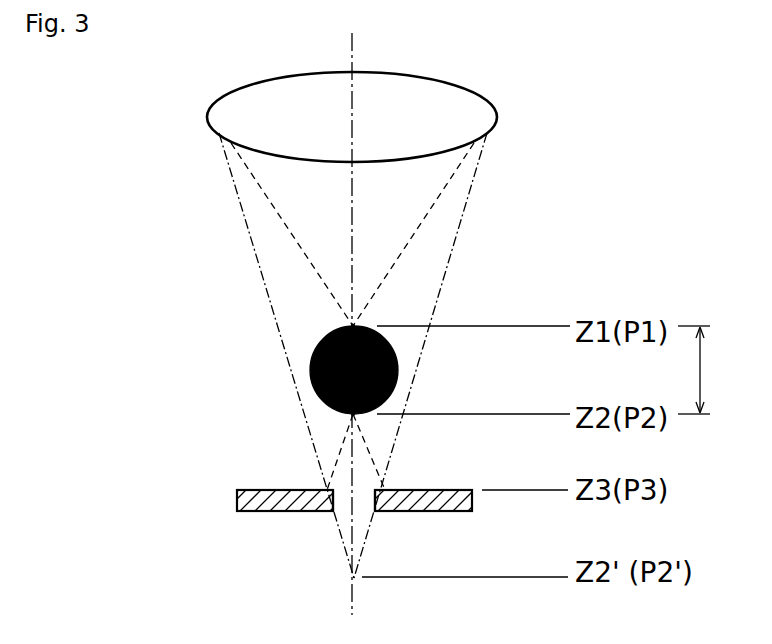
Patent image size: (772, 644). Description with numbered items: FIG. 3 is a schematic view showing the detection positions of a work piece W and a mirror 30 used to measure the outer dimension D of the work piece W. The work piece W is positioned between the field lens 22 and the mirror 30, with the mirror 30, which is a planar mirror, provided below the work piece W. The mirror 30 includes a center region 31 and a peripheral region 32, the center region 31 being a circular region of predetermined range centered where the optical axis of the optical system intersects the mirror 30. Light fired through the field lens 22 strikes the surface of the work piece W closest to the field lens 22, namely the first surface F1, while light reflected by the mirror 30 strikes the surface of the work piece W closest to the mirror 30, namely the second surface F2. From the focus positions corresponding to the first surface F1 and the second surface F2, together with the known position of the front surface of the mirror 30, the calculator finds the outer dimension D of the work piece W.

The field lens 22 is at (470, 122).
The mirror 30 is at (296, 534).
The center region 31 is at (350, 503).
The peripheral region 32 is at (285, 512).
The work piece W is at (310, 369).
The first surface F1 is at (353, 326).
The second surface F2 is at (353, 414).
The outer dimension D is at (705, 370).